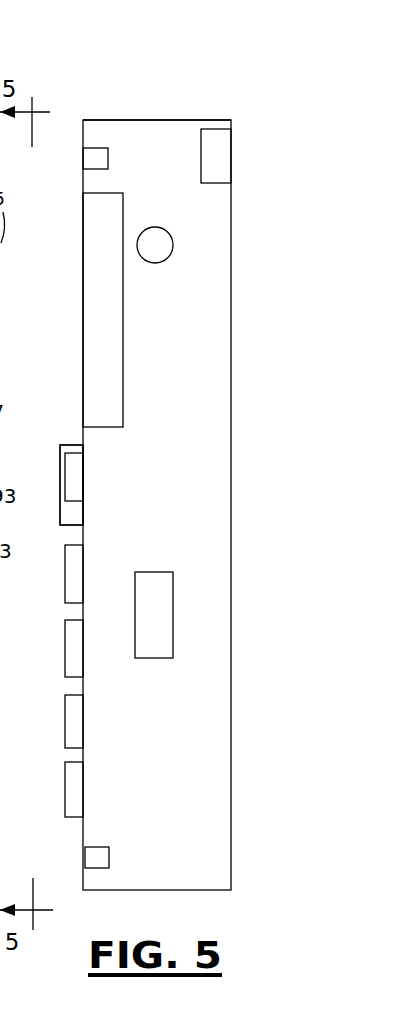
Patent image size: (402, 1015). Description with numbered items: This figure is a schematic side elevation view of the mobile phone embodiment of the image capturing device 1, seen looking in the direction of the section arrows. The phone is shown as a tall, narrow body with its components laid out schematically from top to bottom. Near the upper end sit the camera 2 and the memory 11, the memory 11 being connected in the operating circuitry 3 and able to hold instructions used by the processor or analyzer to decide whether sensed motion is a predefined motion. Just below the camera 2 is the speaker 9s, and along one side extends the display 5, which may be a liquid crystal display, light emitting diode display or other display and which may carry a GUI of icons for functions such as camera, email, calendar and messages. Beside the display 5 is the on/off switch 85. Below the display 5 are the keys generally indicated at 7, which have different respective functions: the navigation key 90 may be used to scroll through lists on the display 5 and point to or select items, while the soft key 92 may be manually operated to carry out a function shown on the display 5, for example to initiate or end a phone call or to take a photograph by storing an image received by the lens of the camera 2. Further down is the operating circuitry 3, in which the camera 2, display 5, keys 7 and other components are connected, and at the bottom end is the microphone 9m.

The image capturing device 1 is at (95, 88).
The memory 11 is at (197, 120).
The camera 2 is at (232, 150).
The speaker 9s is at (83, 162).
The display 5 is at (83, 263).
The on/off switch 85 is at (175, 247).
The keys 7 is at (21, 391).
The navigation key 90 is at (65, 445).
The soft key 92 is at (68, 478).
The operating circuitry 3 is at (172, 612).
The microphone 9m is at (85, 862).